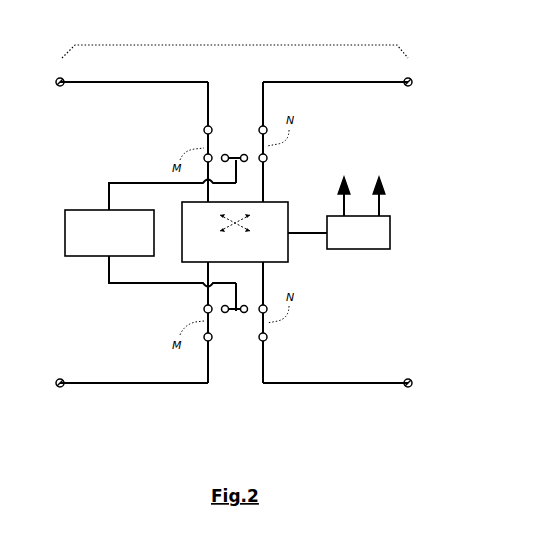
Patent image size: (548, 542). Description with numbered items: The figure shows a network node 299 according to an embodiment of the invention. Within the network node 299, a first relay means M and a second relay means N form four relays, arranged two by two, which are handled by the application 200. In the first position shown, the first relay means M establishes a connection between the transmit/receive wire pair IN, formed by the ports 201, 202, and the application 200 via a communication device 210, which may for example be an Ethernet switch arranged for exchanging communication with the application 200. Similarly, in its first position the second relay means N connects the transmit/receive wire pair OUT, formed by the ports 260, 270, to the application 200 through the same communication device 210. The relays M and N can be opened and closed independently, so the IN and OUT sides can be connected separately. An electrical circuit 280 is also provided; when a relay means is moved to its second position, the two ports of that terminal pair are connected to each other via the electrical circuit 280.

The network node 299 is at (287, 45).
The transmit/receive wire pair IN port 201 is at (177, 84).
The transmit/receive wire pair OUT port 260 is at (400, 86).
The transmit/receive wire pair IN port 202 is at (177, 385).
The transmit/receive wire pair OUT port 270 is at (400, 387).
The electrical circuit 280 is at (65, 248).
The communication device 210 is at (290, 238).
The application 200 is at (358, 250).